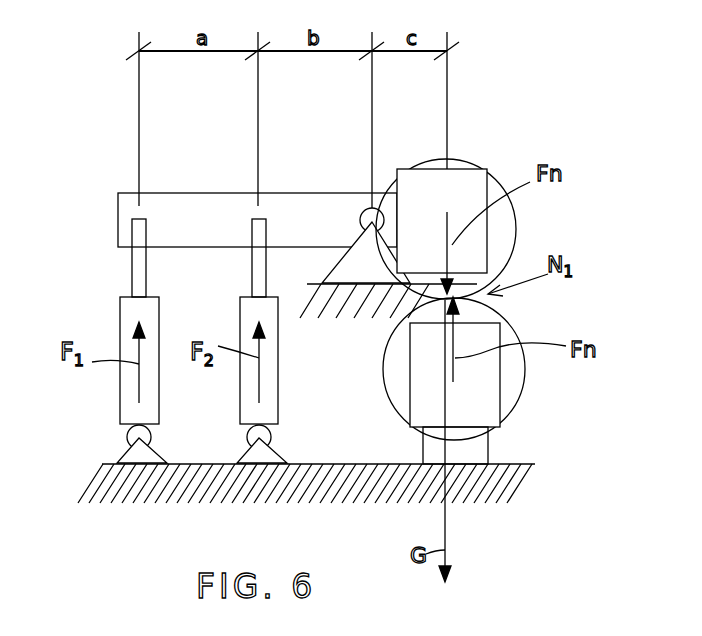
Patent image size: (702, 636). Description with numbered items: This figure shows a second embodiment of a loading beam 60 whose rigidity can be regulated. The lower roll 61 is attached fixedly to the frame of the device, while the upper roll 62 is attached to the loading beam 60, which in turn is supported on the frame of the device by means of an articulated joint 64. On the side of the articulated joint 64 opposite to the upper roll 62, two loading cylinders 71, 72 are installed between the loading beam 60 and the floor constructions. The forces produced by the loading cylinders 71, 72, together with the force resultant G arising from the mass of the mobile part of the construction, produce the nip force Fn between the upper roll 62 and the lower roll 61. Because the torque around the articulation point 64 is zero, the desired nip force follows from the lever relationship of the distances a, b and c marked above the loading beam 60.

The lever arm 60 is at (188, 204).
The lower roller 61 is at (517, 406).
The upper pressure roller 62 is at (490, 192).
The pivot fulcrum 64 is at (367, 208).
The second pressure cylinder 71 is at (250, 305).
The first pressure cylinder 72 is at (130, 308).